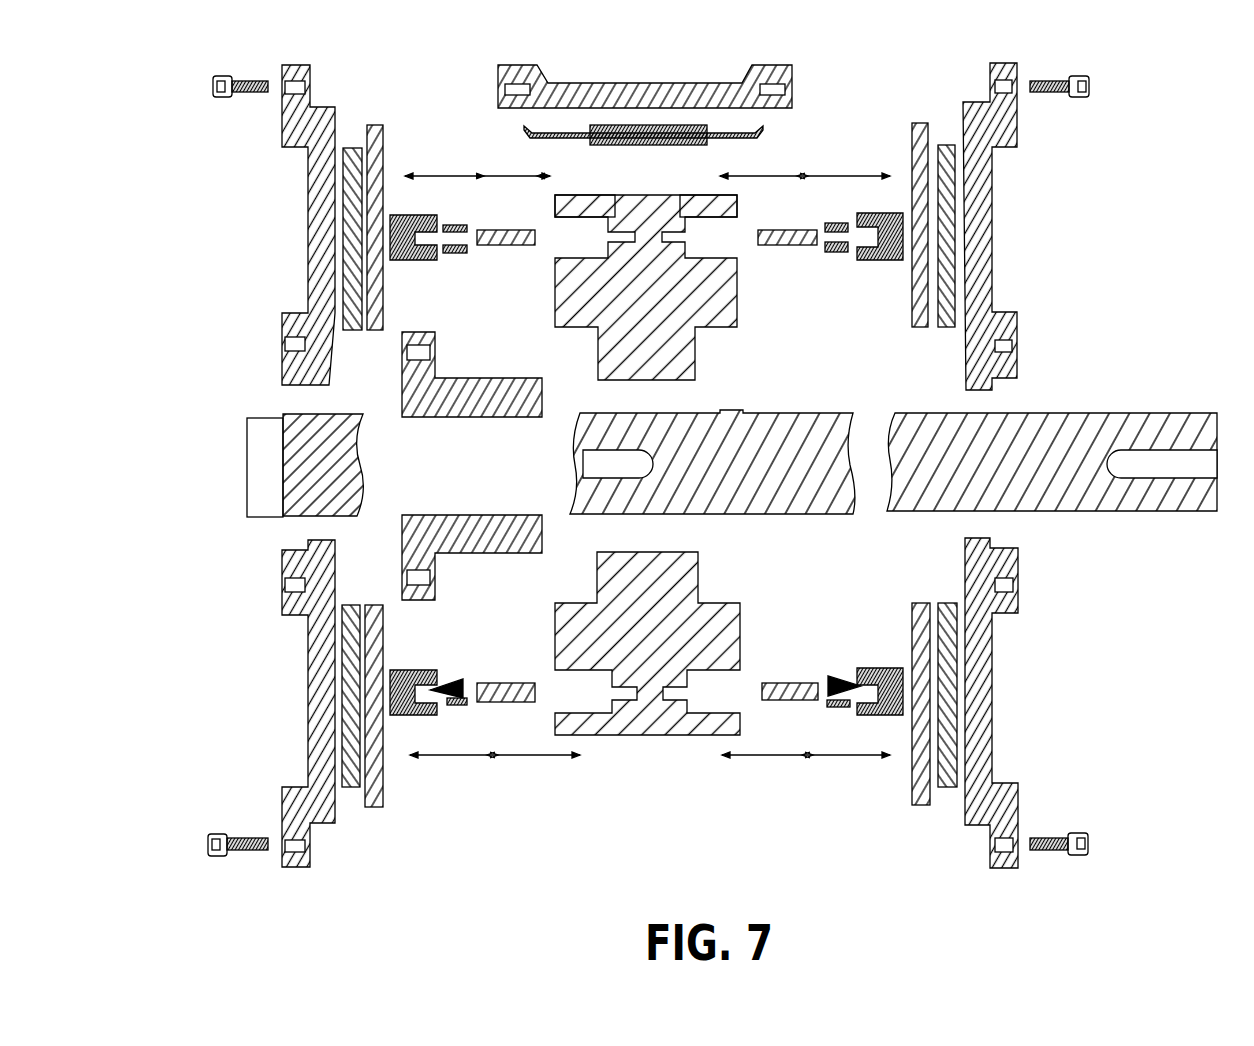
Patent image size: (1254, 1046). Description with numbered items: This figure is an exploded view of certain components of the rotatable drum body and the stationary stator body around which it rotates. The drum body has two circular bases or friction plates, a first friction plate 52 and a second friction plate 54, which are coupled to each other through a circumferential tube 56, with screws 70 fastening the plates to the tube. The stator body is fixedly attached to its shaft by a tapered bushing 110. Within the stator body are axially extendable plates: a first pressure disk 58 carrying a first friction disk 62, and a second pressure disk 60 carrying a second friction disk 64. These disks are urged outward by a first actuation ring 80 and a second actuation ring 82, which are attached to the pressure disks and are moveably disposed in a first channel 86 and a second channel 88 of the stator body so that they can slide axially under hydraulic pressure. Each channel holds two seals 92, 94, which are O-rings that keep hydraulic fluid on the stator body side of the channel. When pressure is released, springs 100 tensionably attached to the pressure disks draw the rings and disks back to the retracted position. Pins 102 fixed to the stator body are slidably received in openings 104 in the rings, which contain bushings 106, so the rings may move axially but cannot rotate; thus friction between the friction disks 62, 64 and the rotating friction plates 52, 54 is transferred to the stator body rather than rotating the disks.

The first friction plate 52 is at (314, 257).
The second friction plate 54 is at (984, 258).
The tube 56 is at (586, 93).
The first pressure disk 58 is at (383, 158).
The second pressure disk 60 is at (915, 165).
The first friction disk 62 is at (352, 156).
The second friction disk 64 is at (945, 148).
The screws 70 is at (240, 834).
The first actuation ring 80 is at (412, 259).
The second actuation ring 82 is at (895, 262).
The first channel 86 is at (566, 236).
The second channel 88 is at (734, 236).
The seal 92 is at (577, 210).
The seal 94 is at (576, 268).
The spring 100 is at (626, 148).
The pin 102 is at (484, 247).
The opening 104 is at (456, 686).
The bushing 106 is at (463, 247).
The tapered bushing 110 is at (458, 378).